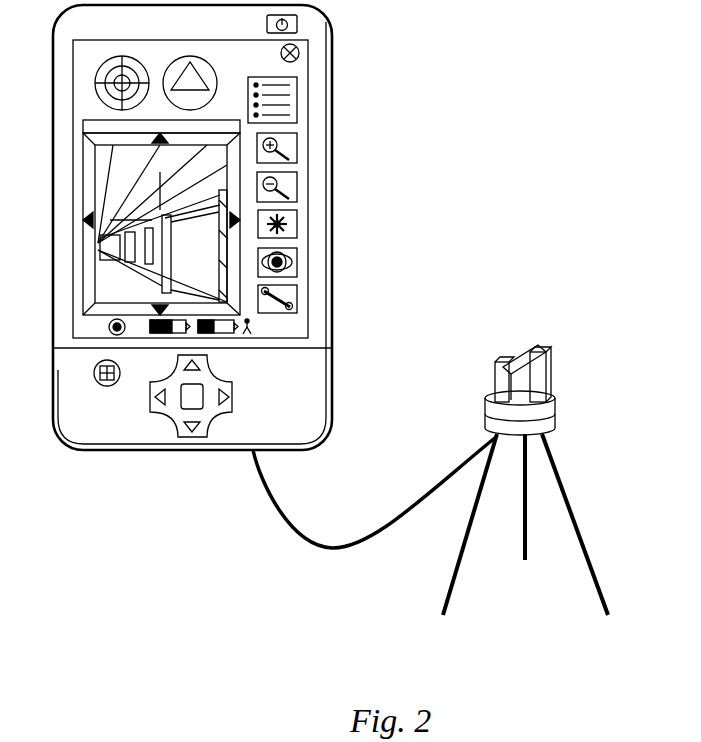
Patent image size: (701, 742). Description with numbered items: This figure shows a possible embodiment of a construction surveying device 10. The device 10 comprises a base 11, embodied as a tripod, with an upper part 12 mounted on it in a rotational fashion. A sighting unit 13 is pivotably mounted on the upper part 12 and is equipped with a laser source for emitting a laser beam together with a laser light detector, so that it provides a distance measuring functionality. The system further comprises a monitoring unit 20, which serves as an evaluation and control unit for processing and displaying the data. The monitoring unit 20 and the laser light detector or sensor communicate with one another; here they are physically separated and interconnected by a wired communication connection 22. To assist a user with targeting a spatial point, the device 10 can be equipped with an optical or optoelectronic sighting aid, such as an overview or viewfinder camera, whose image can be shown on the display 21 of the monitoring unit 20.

The construction surveying device 10 is at (546, 453).
The base 11 is at (549, 520).
The upper part 12 is at (491, 413).
The sighting unit 13 is at (492, 346).
The monitoring unit 20 is at (256, 262).
The display 21 is at (131, 320).
The communication connections 22 is at (344, 513).